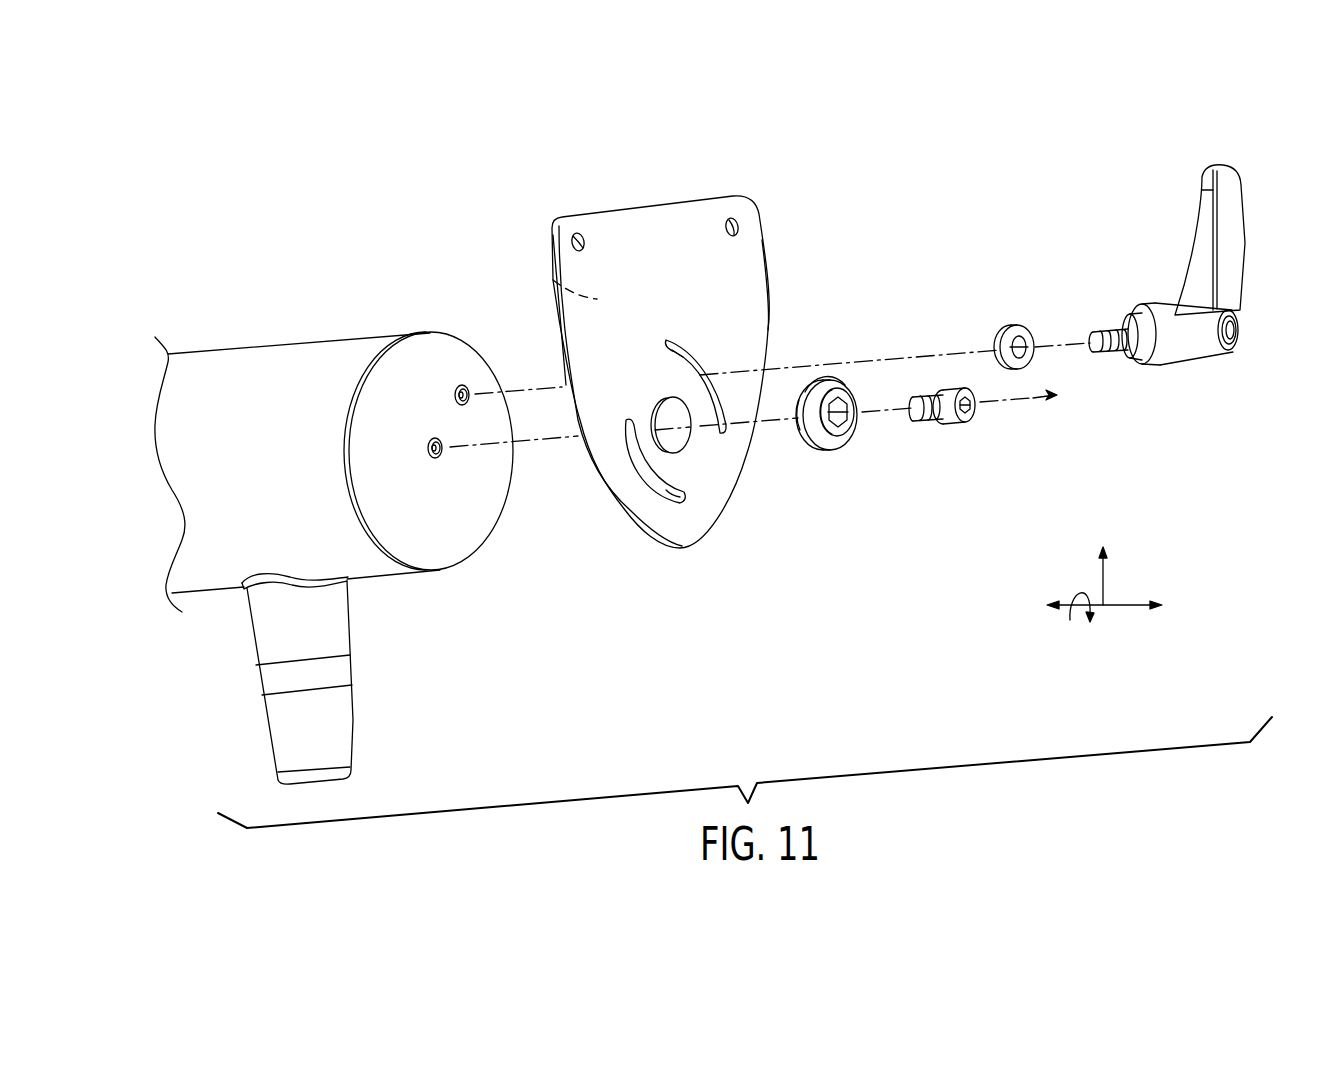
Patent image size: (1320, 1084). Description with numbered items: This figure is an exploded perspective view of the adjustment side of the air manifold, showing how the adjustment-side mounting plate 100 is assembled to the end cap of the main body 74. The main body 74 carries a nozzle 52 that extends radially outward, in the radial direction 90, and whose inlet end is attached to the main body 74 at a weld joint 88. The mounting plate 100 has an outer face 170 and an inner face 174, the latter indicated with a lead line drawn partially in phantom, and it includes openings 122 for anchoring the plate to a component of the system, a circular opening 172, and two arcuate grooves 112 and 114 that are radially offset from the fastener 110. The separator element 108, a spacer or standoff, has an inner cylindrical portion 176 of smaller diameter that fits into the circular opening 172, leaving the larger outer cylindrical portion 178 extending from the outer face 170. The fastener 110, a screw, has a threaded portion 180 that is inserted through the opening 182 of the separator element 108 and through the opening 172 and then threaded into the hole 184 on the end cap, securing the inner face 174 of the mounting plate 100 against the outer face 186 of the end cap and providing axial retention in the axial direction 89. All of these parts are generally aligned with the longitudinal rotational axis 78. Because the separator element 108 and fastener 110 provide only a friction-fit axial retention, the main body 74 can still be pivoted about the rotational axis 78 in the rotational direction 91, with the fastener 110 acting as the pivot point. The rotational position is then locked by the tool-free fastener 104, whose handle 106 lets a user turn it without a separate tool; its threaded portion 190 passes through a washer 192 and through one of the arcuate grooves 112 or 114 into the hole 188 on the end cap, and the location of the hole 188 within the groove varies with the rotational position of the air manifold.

The nozzle 52 is at (354, 727).
The main body 74 is at (287, 352).
The rotational axis 78 is at (1012, 402).
The weld joint 88 is at (289, 574).
The axial direction 89 is at (1125, 608).
The radial direction 90 is at (1108, 583).
The rotational direction 91 is at (1072, 613).
The adjustment-side mounting plate 100 is at (643, 203).
The tool-free fastener 104 is at (1203, 172).
The handle 106 is at (1233, 238).
The separator element 108 is at (827, 450).
The fastener 110 is at (958, 418).
The arcuate groove 112 is at (677, 345).
The arcuate groove 114 is at (677, 500).
The opening 122 is at (586, 246).
The outer face 170 is at (752, 260).
The circular opening 172 is at (663, 413).
The inner face 174 is at (553, 282).
The inner cylindrical portion 176 is at (800, 428).
The outer cylindrical portion 178 is at (812, 392).
The threaded portion 180 is at (935, 420).
The opening 182 is at (850, 422).
The hole 184 is at (433, 458).
The outer face 186 is at (447, 367).
The hole 188 is at (455, 396).
The threaded portion 190 is at (1110, 334).
The washer 192 is at (1002, 336).